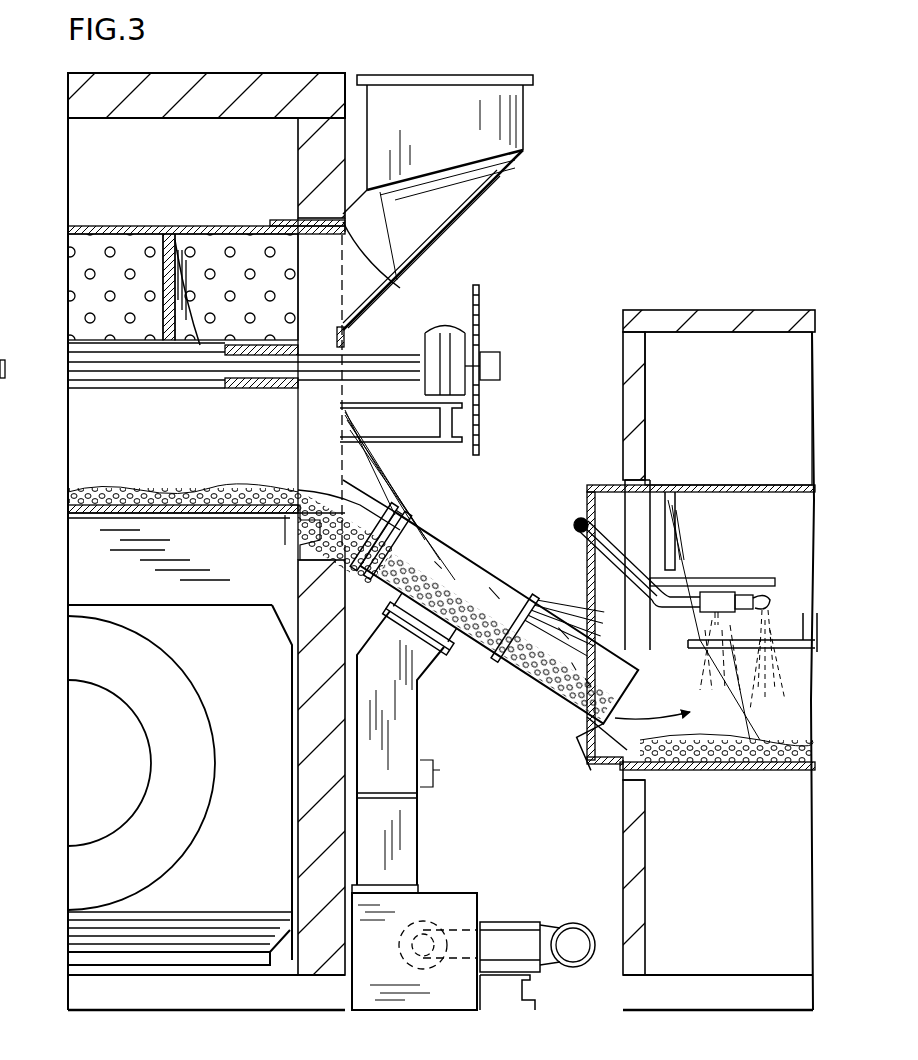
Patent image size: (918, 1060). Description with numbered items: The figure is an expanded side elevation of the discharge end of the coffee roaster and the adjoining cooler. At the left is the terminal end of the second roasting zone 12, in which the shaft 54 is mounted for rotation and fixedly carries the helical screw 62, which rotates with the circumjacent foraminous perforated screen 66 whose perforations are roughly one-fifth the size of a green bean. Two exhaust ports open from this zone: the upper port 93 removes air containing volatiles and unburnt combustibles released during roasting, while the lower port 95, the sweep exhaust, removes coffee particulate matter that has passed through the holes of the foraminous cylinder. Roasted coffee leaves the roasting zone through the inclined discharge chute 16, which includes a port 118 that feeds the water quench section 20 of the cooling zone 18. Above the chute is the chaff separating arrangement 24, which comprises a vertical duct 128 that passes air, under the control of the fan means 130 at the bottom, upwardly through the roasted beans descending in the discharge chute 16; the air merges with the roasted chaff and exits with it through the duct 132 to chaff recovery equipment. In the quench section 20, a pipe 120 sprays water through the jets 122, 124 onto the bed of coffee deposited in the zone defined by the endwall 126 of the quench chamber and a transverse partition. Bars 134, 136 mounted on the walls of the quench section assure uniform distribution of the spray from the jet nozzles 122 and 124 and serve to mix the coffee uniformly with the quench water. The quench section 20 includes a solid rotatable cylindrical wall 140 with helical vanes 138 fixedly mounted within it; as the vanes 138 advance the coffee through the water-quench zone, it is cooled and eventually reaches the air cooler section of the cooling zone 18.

The second roasting zone 12 is at (206, 541).
The discharge chute 16 is at (463, 540).
The cooling zone 18 is at (680, 305).
The water quench section 20 is at (728, 408).
The chaff separating arrangement 24 is at (443, 216).
The shaft 54 is at (200, 365).
The helical screw 62 is at (188, 313).
The foraminous perforated screen 66 is at (113, 247).
The upper port 93 is at (330, 312).
The lower port 95 is at (297, 478).
The port 118 is at (555, 598).
The pipe 120 is at (578, 518).
The jet 122 is at (735, 592).
The jet 124 is at (795, 598).
The endwall 126 is at (590, 737).
The vertical duct 128 is at (395, 712).
The fan means 130 is at (455, 895).
The duct 132 is at (360, 265).
The bar 134 is at (708, 578).
The bar 136 is at (697, 645).
The helical vanes 138 is at (690, 520).
The rotatable cylindrical wall 140 is at (760, 770).